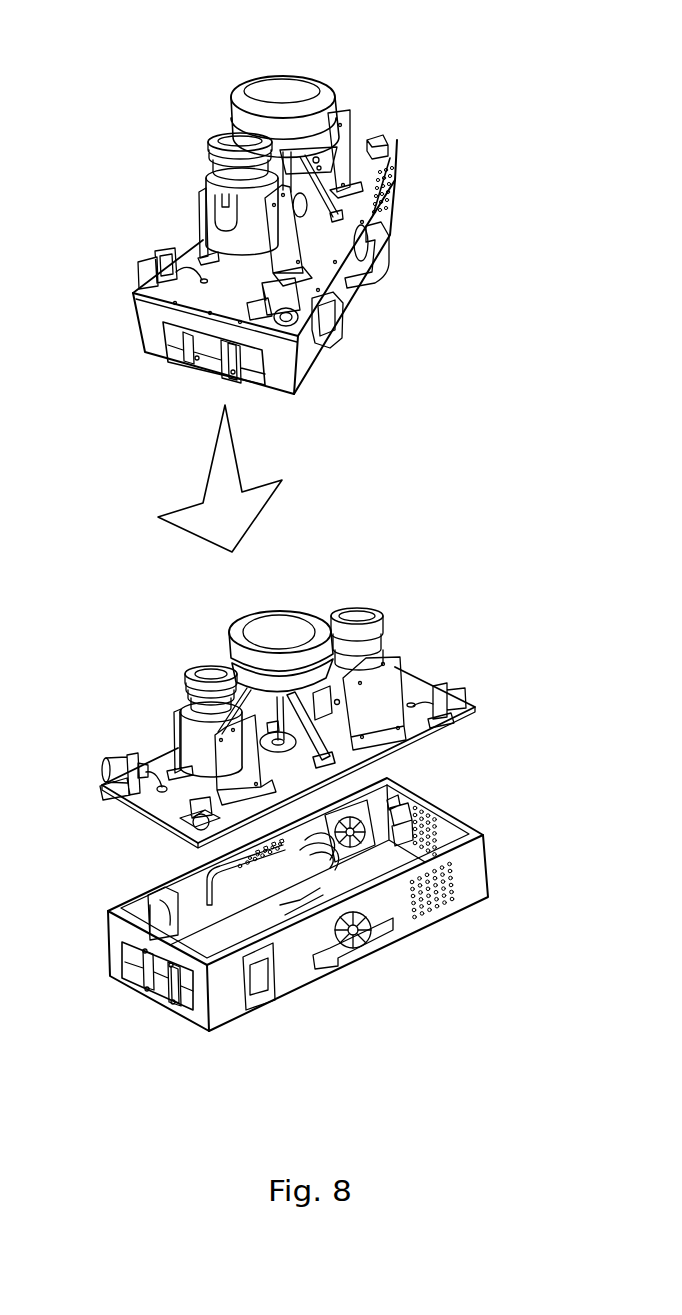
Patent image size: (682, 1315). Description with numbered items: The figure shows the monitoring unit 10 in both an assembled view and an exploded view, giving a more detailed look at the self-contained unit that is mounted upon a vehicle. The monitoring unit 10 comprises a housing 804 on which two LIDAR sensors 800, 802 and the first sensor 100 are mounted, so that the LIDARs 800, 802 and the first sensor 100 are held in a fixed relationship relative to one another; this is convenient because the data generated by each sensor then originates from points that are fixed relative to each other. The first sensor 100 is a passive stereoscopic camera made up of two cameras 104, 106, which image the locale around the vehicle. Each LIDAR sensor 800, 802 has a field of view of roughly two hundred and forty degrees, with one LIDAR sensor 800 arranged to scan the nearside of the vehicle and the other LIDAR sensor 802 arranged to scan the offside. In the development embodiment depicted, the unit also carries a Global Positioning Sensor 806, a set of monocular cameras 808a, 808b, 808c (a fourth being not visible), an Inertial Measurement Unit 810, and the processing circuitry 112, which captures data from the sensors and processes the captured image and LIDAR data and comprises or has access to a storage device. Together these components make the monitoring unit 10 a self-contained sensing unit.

The monitoring unit 10 is at (395, 218).
The first sensor 100 is at (187, 375).
The camera 104 is at (177, 347).
The camera 106 is at (262, 390).
The processing circuitry 112 is at (353, 885).
The LIDAR sensor 800 is at (217, 162).
The LIDAR sensor 802 is at (337, 78).
The housing 804 is at (395, 178).
The Global Positioning Sensor 806 is at (268, 625).
The monocular camera 808a is at (125, 757).
The monocular camera 808b is at (197, 837).
The monocular camera 808c is at (453, 688).
The Inertial Measurement Unit 810 is at (287, 777).